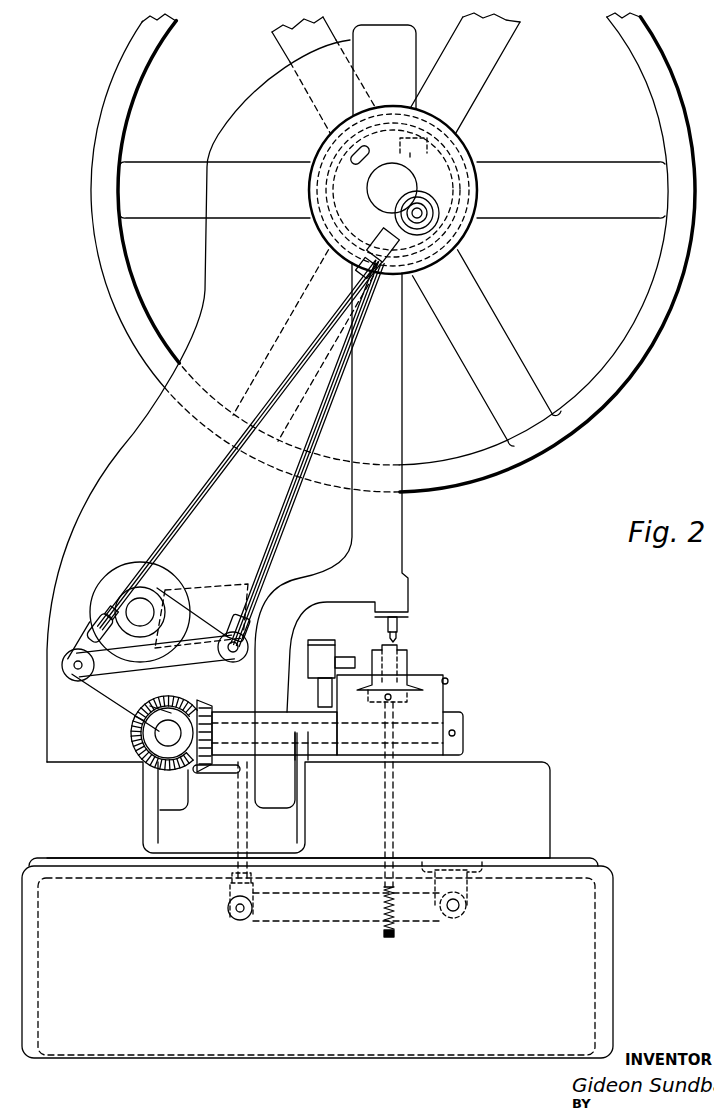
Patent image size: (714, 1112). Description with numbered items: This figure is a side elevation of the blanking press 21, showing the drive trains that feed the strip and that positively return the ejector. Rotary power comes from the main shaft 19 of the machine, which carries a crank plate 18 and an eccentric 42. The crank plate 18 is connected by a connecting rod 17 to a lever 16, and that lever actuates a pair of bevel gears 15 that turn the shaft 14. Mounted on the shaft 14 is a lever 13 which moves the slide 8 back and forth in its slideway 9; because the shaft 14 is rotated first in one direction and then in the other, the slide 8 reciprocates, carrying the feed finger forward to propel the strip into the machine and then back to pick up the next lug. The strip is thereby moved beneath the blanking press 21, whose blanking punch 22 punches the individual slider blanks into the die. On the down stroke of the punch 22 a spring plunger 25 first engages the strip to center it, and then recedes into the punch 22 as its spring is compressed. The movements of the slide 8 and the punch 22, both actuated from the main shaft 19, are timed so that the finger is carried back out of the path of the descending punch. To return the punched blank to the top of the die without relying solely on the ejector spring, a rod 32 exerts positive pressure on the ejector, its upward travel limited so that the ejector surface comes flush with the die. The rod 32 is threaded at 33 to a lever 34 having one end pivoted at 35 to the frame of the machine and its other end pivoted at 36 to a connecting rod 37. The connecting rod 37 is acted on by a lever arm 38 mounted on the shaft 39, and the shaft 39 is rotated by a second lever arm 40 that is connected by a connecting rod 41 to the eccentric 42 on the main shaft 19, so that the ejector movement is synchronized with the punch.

The slide 8 is at (408, 662).
The slideway 9 is at (428, 705).
The lever 13 is at (323, 688).
The shaft 14 is at (465, 733).
The bevel gears 15 is at (198, 698).
The lever 16 is at (110, 710).
The connecting rod 17 is at (213, 480).
The crank plate 18 is at (470, 233).
The main shaft 19 is at (405, 180).
The blanking press 21 is at (118, 453).
The blanking punch 22 is at (397, 625).
The spring plunger 25 is at (393, 638).
The rod 32 is at (392, 808).
The threaded connection 33 is at (395, 935).
The lever 34 is at (335, 922).
The pivot 35 is at (466, 906).
The pivot 36 is at (228, 910).
The connecting rod 37 is at (243, 840).
The lever arm 38 is at (228, 582).
The shaft 39 is at (138, 600).
The lever arm 40 is at (197, 596).
The connecting rod 41 is at (272, 542).
The eccentric 42 is at (333, 188).